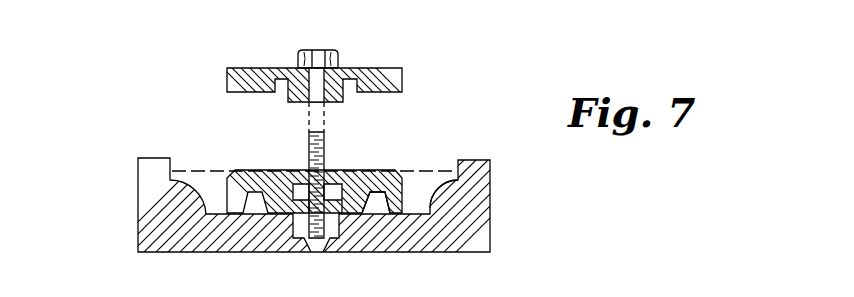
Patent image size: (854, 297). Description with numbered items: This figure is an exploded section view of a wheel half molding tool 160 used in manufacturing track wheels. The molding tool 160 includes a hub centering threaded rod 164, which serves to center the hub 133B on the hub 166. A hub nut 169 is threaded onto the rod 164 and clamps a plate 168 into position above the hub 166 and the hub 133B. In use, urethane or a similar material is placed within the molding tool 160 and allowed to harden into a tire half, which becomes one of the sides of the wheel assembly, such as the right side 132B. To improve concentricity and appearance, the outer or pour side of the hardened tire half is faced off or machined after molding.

The wheel half molding tool 160 is at (490, 222).
The right side 132B is at (432, 179).
The hub 133B is at (387, 182).
The hub 166 is at (343, 170).
The plate 168 is at (248, 80).
The hub centering threaded rod 164 is at (326, 140).
The hub nut 169 is at (338, 58).